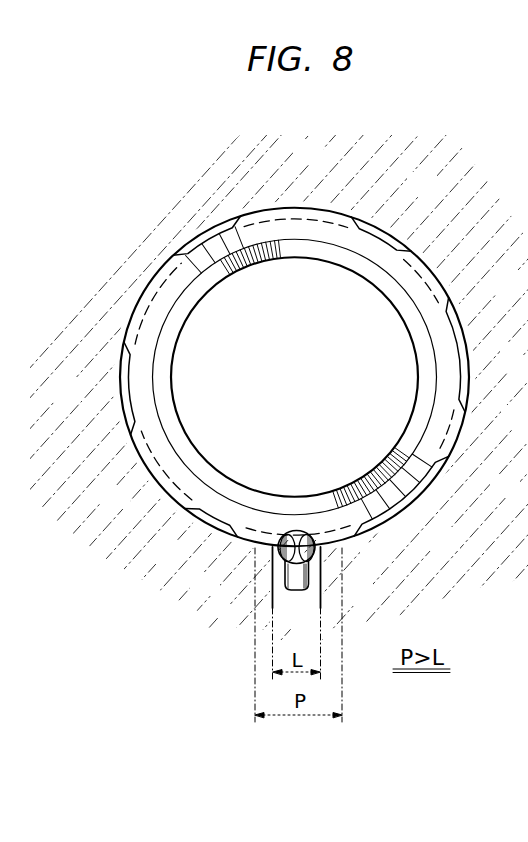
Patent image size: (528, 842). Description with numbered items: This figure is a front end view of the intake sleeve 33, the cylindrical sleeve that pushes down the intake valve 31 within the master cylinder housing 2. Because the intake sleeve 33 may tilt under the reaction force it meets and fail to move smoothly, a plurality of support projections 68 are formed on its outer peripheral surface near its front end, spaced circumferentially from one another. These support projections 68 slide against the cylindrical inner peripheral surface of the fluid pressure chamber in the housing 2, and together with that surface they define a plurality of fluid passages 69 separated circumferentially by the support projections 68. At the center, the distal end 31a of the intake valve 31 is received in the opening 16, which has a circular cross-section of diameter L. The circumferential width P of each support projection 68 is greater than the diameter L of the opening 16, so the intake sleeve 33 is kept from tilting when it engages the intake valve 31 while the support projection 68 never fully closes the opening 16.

The master cylinder housing 2 is at (503, 368).
The opening 16 is at (313, 572).
The intake valve 31 is at (282, 579).
The distal end of the intake valve 31a is at (296, 533).
The intake sleeve 33 is at (227, 512).
The support projections 68 is at (297, 208).
The fluid passages 69 is at (200, 232).